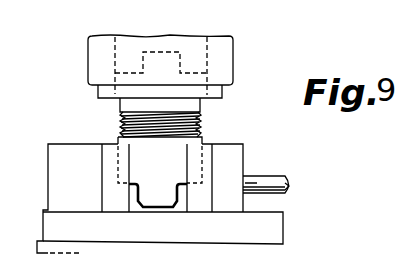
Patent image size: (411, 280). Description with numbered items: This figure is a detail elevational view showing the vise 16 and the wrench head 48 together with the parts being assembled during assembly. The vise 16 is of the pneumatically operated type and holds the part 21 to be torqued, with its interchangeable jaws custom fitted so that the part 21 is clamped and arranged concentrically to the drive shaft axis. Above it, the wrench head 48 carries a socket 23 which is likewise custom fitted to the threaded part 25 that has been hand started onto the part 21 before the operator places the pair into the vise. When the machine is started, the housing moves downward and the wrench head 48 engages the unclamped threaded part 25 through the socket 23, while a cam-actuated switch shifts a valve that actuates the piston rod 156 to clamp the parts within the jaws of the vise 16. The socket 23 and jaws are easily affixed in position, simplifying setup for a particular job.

The vise 16 is at (62, 141).
The part 21 is at (160, 171).
The socket 23 is at (98, 97).
The threaded part 25 is at (198, 106).
The wrench head 48 is at (235, 72).
The piston rod 156 is at (273, 178).